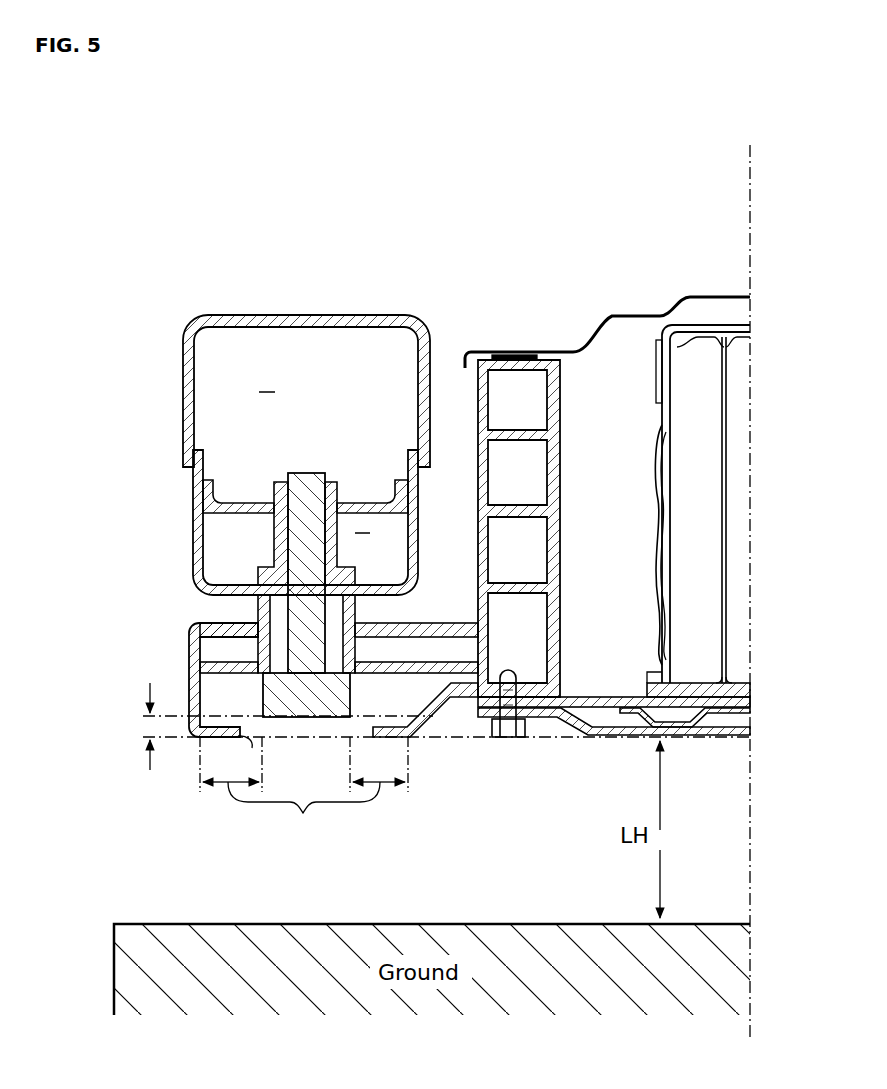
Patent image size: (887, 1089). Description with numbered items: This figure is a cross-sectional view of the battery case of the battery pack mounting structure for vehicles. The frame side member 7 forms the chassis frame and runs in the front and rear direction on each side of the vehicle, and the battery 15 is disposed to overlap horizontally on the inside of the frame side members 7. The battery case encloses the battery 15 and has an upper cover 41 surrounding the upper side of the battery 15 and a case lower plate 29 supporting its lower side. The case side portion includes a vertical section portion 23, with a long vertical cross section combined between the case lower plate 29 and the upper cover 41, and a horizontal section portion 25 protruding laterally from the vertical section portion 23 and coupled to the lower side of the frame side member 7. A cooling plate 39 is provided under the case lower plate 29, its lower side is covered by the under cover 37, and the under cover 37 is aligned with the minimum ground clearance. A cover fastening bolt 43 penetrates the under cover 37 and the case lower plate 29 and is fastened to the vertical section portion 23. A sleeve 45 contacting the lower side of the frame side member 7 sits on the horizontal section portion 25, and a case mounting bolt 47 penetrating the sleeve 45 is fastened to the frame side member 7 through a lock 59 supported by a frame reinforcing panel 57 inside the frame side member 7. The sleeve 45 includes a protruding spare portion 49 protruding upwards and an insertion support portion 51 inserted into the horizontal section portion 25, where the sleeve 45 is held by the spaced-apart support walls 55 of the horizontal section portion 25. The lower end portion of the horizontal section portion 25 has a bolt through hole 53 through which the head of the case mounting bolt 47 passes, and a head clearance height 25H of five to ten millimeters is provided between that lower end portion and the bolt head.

The frame side member 7 is at (340, 316).
The battery 15 is at (696, 500).
The vertical section portion 23 is at (560, 432).
The horizontal section portion 25 is at (190, 688).
The head clearance height 25H is at (117, 726).
The case lower plate 29 is at (730, 696).
The under cover 37 is at (732, 733).
The cooling plate 39 is at (692, 719).
The upper cover 41 is at (638, 313).
The cover fastening bolt 43 is at (510, 740).
The sleeve 45 is at (107, 600).
The case mounting bolt 47 is at (302, 482).
The protruding spare portion 49 is at (256, 622).
The insertion support portion 51 is at (250, 641).
The bolt through hole 53 is at (252, 748).
The connecting plates 55 is at (407, 670).
The frame reinforcing panel 57 is at (248, 503).
The lock 59 is at (282, 485).